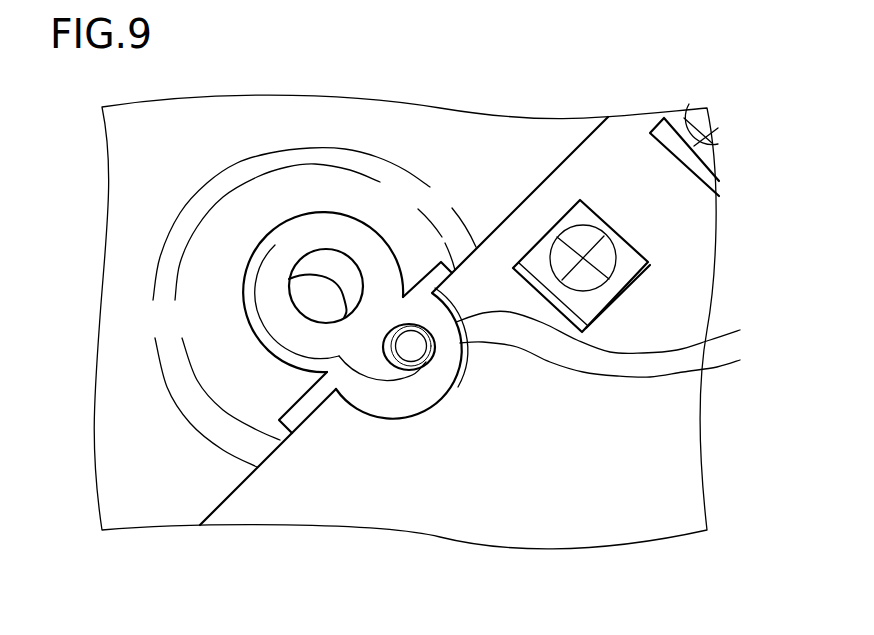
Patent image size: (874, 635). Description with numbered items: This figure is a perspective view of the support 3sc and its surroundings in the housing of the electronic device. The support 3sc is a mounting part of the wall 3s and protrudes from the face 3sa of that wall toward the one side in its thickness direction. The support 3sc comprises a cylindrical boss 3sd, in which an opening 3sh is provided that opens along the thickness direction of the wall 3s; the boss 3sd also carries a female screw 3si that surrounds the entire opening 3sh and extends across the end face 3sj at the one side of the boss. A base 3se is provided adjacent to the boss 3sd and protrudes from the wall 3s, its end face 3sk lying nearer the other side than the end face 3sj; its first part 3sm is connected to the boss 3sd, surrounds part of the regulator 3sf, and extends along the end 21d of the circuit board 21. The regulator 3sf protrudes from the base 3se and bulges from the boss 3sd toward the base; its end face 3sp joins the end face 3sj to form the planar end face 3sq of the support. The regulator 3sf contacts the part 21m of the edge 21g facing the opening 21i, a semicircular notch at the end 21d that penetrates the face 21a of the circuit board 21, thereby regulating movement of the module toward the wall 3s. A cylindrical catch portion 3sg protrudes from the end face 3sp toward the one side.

The wall 3s is at (294, 319).
The face 3sa is at (467, 133).
The boss 3sd is at (309, 199).
The support 3sc is at (296, 206).
The female screw 3si is at (333, 263).
The opening 3sh is at (308, 296).
The end face 3sj is at (183, 287).
The planar end face 3sq is at (267, 280).
The end face 3sp is at (450, 458).
The regulator 3sf is at (375, 375).
The catch portion 3sg is at (417, 350).
The end face 3sk is at (280, 492).
The first part 3sm is at (280, 492).
The base 3se is at (295, 418).
The circuit board 21 is at (453, 292).
The face 21a is at (668, 422).
The end 21d is at (459, 280).
The edge 21g is at (557, 167).
The part 21m is at (621, 332).
The opening 21i is at (615, 359).